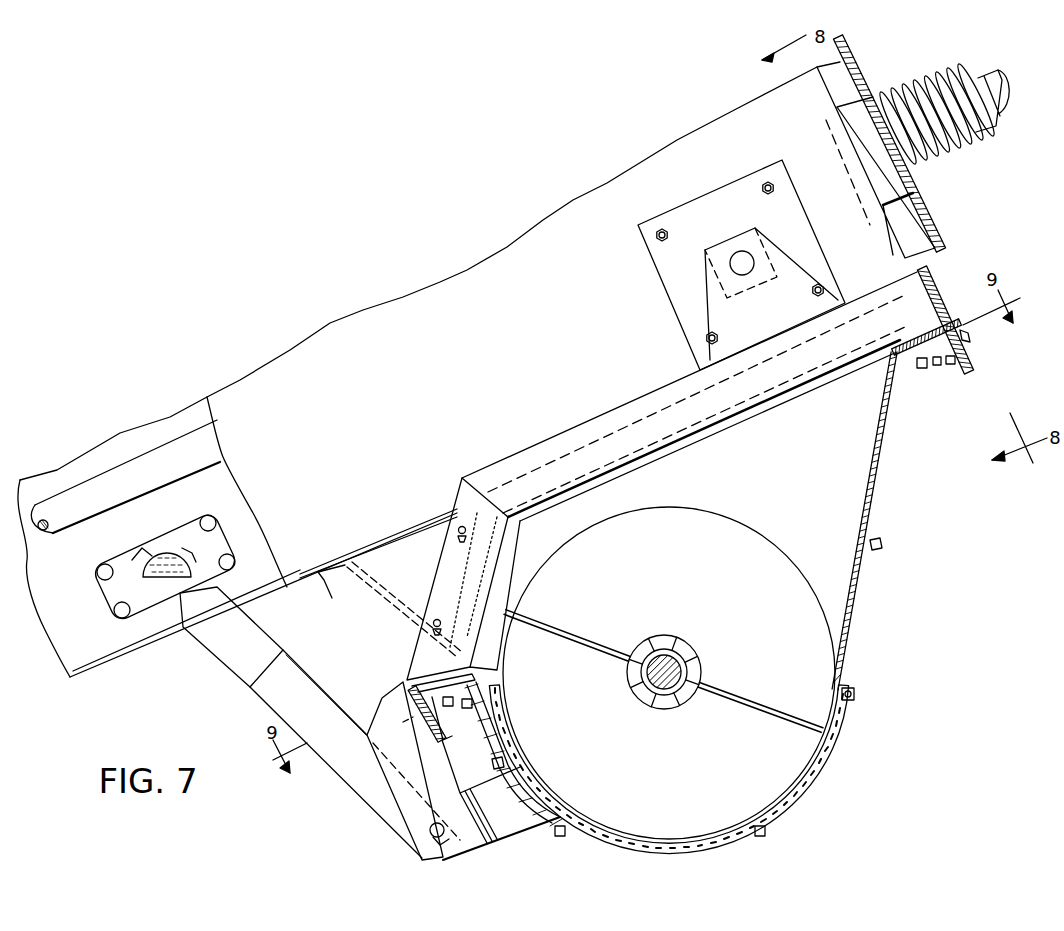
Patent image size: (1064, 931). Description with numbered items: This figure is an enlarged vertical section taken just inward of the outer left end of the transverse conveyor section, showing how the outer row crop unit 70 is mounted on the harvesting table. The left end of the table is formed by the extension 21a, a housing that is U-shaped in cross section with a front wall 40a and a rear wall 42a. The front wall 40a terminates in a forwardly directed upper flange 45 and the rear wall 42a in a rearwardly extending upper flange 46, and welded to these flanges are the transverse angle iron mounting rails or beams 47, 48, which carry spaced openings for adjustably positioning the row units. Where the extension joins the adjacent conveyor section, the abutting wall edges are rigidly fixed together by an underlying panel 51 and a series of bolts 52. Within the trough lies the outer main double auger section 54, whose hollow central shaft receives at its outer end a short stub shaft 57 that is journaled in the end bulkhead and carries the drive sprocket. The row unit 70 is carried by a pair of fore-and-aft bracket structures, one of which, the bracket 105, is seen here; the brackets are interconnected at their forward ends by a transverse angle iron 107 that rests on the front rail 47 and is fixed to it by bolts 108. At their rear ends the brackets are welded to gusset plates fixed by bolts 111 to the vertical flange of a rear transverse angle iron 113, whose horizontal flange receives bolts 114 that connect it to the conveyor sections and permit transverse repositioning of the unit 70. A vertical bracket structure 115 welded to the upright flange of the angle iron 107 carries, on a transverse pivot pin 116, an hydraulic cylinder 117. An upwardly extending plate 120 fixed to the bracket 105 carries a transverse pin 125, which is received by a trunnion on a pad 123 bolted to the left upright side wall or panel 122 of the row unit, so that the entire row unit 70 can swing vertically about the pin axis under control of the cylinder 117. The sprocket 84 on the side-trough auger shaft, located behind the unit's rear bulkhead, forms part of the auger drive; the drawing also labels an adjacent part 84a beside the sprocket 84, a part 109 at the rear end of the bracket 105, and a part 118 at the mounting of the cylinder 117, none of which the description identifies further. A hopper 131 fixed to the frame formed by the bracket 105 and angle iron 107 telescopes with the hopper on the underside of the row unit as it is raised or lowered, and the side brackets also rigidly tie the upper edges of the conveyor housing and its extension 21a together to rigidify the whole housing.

The extension 21a is at (885, 521).
The front wall 40a is at (500, 730).
The rear wall 42a is at (878, 525).
The forwardly directed flange 45 is at (474, 692).
The rearwardly extending flange 46 is at (937, 365).
The front mounting rail 47 is at (478, 680).
The rear mounting rail 48 is at (950, 364).
The underlying panel 51 is at (820, 770).
The bolts 52 is at (856, 695).
The outer main double auger section 54 is at (817, 712).
The stub shaft 57 is at (668, 665).
The outer row crop unit 70 is at (233, 400).
The sprocket 84 is at (852, 55).
The spring 84a is at (917, 93).
The fore-and-aft bracket structure 105 is at (556, 446).
The transverse angle iron 107 is at (404, 684).
The bolts 108 is at (446, 712).
The end plate 109 is at (937, 283).
The bolts 111 is at (968, 338).
The rear transverse angle iron 113 is at (951, 322).
The bolts 114 is at (922, 368).
The bracket structure 115 is at (407, 793).
The pivot pin 116 is at (448, 837).
The hydraulic cylinder 117 is at (342, 758).
The mounting plate 118 is at (178, 535).
The upright plate 120 is at (724, 294).
The left upright side wall 122 is at (463, 290).
The pad 123 is at (717, 197).
The transverse pin 125 is at (740, 265).
The hopper 131 is at (403, 558).